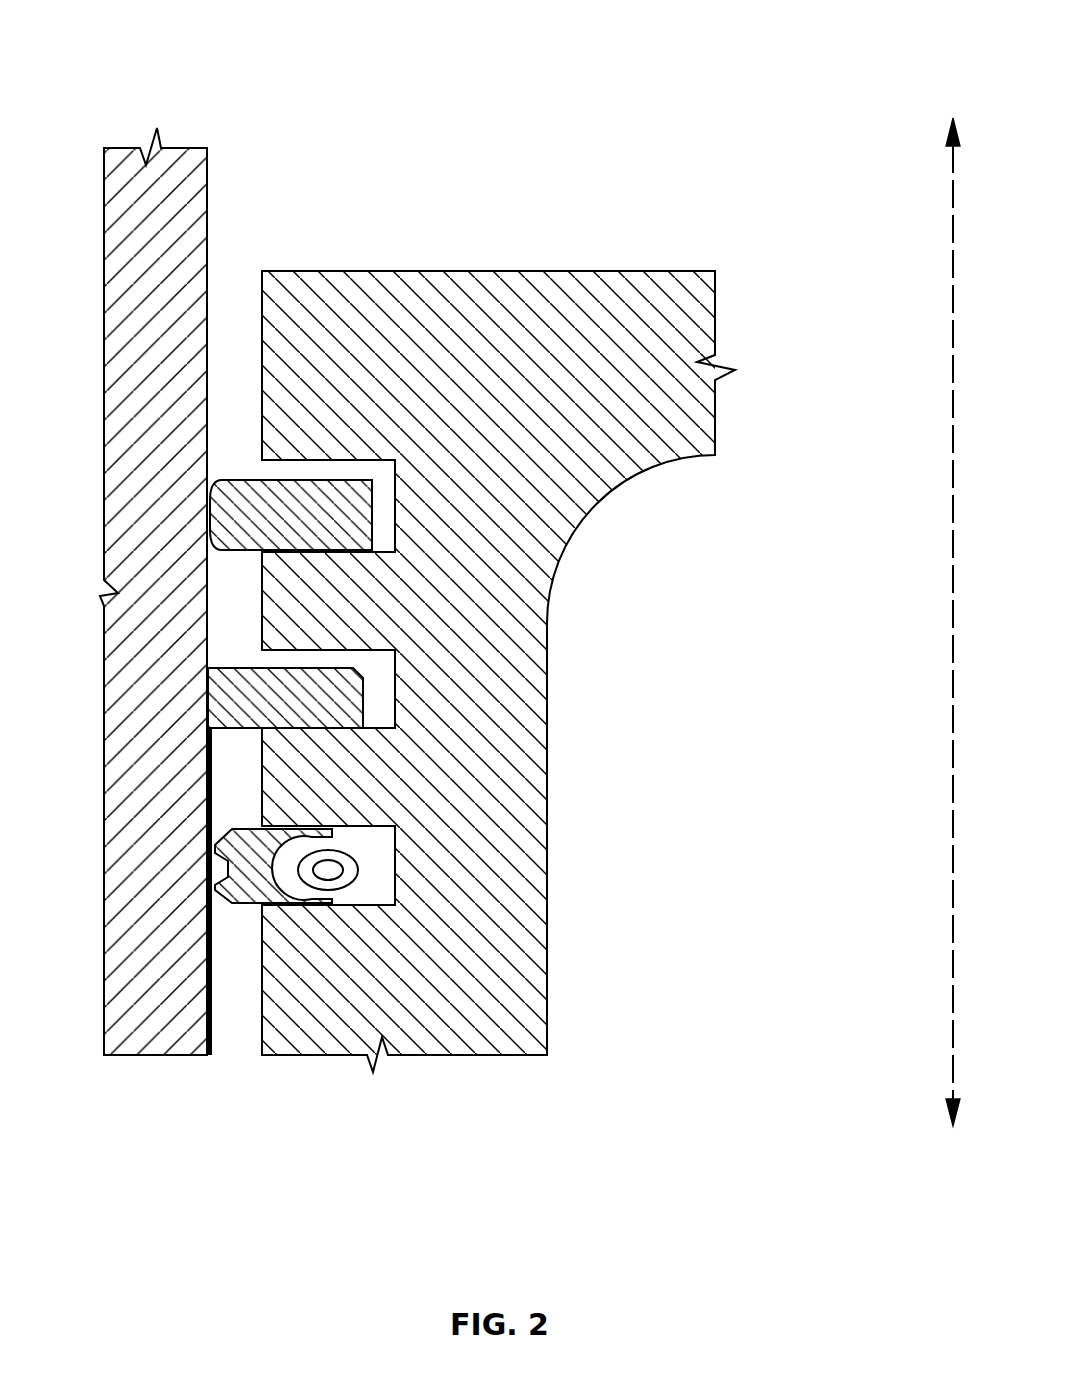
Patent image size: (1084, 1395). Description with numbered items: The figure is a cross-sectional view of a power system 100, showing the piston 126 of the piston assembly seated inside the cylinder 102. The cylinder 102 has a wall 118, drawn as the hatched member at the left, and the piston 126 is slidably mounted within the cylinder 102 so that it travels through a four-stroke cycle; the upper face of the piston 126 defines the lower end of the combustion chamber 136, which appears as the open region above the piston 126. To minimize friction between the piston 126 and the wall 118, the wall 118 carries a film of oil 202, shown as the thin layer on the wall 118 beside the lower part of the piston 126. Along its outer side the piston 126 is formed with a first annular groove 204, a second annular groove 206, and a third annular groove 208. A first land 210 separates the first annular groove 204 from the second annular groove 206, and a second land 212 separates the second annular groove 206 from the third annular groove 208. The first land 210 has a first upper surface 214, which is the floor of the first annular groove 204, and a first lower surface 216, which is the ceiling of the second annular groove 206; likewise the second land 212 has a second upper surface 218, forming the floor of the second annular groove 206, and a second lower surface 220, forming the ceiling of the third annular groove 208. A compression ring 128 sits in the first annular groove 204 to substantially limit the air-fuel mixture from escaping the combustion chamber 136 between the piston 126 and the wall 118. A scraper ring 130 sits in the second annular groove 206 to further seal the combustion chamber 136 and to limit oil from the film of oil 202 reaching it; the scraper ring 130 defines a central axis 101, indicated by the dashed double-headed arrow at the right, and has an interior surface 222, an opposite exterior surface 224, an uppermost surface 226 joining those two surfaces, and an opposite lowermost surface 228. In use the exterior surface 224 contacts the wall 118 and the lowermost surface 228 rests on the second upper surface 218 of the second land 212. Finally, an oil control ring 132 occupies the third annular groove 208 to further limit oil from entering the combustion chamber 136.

The power system 100 is at (131, 42).
The central axis 101 is at (953, 662).
The cylinder 102 is at (104, 266).
The wall 118 is at (207, 212).
The piston 126 is at (547, 957).
The compression ring 128 is at (210, 516).
The scraper ring 130 is at (238, 697).
The oil control ring 132 is at (227, 862).
The combustion chamber 136 is at (475, 204).
The film of oil 202 is at (211, 1008).
The first annular groove 204 is at (295, 472).
The second annular groove 206 is at (297, 663).
The third annular groove 208 is at (388, 901).
The first land 210 is at (262, 612).
The second land 212 is at (262, 797).
The first upper surface 214 is at (380, 557).
The first lower surface 216 is at (370, 648).
The second upper surface 218 is at (380, 732).
The second lower surface 220 is at (378, 830).
The interior surface 222 is at (363, 708).
The exterior surface 224 is at (207, 724).
The uppermost surface 226 is at (317, 668).
The lowermost surface 228 is at (290, 733).